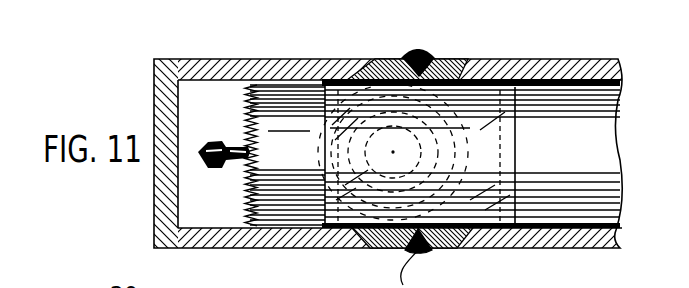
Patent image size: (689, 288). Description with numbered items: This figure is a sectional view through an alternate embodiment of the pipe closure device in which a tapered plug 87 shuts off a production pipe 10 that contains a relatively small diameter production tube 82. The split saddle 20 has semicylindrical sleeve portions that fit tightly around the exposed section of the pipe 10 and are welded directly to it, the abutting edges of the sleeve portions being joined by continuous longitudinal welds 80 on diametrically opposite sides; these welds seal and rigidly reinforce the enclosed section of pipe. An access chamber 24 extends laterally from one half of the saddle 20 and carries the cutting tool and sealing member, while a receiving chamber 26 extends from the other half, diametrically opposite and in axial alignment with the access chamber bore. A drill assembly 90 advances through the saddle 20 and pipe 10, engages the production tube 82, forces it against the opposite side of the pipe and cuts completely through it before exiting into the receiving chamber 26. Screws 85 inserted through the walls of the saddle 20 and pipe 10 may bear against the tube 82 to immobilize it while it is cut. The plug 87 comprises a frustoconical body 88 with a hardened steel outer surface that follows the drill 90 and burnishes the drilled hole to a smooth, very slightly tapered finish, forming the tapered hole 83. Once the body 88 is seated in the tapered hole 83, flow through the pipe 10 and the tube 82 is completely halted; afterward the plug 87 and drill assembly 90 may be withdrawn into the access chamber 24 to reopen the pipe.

The production pipe 10 is at (532, 74).
The saddle 20 is at (546, 148).
The access chamber 24 is at (586, 249).
The receiving chamber 26 is at (196, 58).
The longitudinal welds 80 is at (418, 50).
The production tube 82 is at (394, 152).
The tapered hole 83 is at (383, 100).
The screws 85 is at (500, 76).
The tapered plug 87 is at (340, 100).
The frustoconical body 88 is at (492, 202).
The drill assembly 90 is at (280, 110).